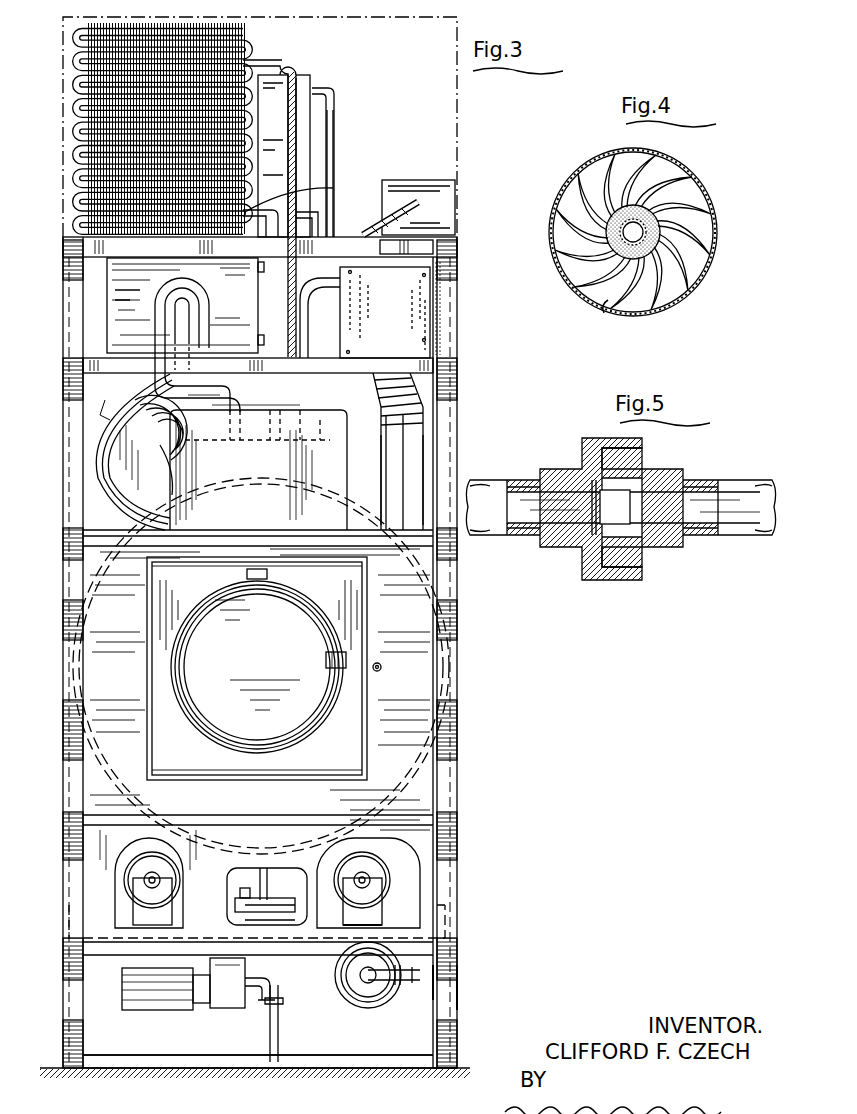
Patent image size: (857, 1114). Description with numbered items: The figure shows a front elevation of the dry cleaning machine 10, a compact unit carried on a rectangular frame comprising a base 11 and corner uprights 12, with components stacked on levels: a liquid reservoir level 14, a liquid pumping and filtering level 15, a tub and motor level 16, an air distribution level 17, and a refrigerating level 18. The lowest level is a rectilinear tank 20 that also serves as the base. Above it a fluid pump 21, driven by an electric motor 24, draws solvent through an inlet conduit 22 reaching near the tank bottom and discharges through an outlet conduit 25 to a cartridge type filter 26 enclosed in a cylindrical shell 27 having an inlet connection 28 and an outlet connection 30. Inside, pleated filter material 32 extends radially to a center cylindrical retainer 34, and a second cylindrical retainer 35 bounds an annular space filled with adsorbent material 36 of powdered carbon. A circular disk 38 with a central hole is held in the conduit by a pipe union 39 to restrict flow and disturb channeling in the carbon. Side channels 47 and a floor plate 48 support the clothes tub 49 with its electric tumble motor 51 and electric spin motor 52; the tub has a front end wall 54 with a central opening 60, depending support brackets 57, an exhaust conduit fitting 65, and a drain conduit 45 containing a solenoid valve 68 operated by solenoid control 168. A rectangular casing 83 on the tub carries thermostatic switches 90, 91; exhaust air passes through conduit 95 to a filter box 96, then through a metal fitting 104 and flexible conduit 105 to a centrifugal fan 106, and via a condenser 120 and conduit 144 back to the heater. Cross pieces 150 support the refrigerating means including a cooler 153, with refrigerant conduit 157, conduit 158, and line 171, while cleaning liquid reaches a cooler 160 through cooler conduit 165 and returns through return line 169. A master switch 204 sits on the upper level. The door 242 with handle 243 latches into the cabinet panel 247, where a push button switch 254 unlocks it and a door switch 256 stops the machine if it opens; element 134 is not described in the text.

In FIG. 3, the dry cleaning machine 10 is at (455, 737).
In FIG. 3, the base 11 is at (380, 1071).
In FIG. 3, the corner uprights 12 is at (63, 997).
In FIG. 3, the liquid reservoir level 14 is at (458, 1013).
In FIG. 3, the liquid pumping and filtering level 15 is at (458, 989).
In FIG. 3, the tub and motor level 16 is at (458, 806).
In FIG. 3, the air distribution level 17 is at (458, 441).
In FIG. 3, the refrigerating level 18 is at (458, 137).
In FIG. 3, the rectilinear tank 20 is at (336, 1059).
In FIG. 3, the fluid pump 21 is at (226, 1009).
In FIG. 3, the inlet conduit 22 is at (280, 1009).
In FIG. 3, the electric motor 24 is at (122, 993).
In FIG. 5, the outlet conduit 25 is at (700, 537).
In FIG. 3, the cartridge type filter 26 is at (352, 986).
In FIG. 4, the cylindrical shell 27 is at (660, 317).
In FIG. 3, the inlet connection 28 is at (370, 965).
In FIG. 5, the inlet connection 28 is at (490, 537).
In FIG. 3, the outlet connection 30 is at (368, 1006).
In FIG. 4, the pleated filter material 32 is at (606, 315).
In FIG. 4, the center cylindrical retainer 34 is at (660, 227).
In FIG. 4, the second cylindrical retainer 35 is at (668, 175).
In FIG. 4, the adsorbent material 36 is at (648, 241).
In FIG. 5, the circular disk 38 is at (606, 533).
In FIG. 5, the pipe union 39 is at (608, 582).
In FIG. 3, the drain conduit 45 is at (260, 1013).
In FIG. 3, the side channels 47 is at (75, 937).
In FIG. 3, the floor plate 48 is at (172, 941).
In FIG. 3, the clothes tub 49 is at (442, 585).
In FIG. 3, the electric tumble motor 51 is at (138, 887).
In FIG. 3, the electric spin motor 52 is at (410, 889).
In FIG. 3, the front end wall 54 is at (362, 884).
In FIG. 3, the support brackets 57 is at (420, 853).
In FIG. 3, the central opening 60 is at (360, 733).
In FIG. 3, the conduit fitting 65 is at (376, 506).
In FIG. 3, the solenoid valve 68 is at (278, 913).
In FIG. 3, the rectangular casing 83 is at (347, 496).
In FIG. 3, the safety thermostatic switch 90 is at (258, 462).
In FIG. 3, the thermostatic control switch 91 is at (313, 448).
In FIG. 3, the conduit 95 is at (424, 391).
In FIG. 3, the filter box 96 is at (440, 333).
In FIG. 3, the metal fitting 104 is at (340, 327).
In FIG. 3, the flexible conduit 105 is at (144, 471).
In FIG. 3, the centrifugal fan 106 is at (158, 446).
In FIG. 3, the condenser 120 is at (107, 290).
In FIG. 3, the blower housing 134 is at (135, 452).
In FIG. 3, the conduit 144 is at (138, 315).
In FIG. 3, the cross pieces 150 is at (458, 247).
In FIG. 3, the cooler 153 is at (246, 33).
In FIG. 3, the conduit 157 is at (334, 190).
In FIG. 3, the conduit 158 is at (310, 78).
In FIG. 3, the cooler 160 is at (334, 92).
In FIG. 3, the cooler conduit 165 is at (320, 212).
In FIG. 3, the solenoid control 168 is at (238, 897).
In FIG. 3, the return line 169 is at (334, 145).
In FIG. 3, the line 171 is at (292, 67).
In FIG. 3, the master switch 204 is at (458, 212).
In FIG. 3, the door 242 is at (362, 771).
In FIG. 3, the handle 243 is at (326, 661).
In FIG. 3, the cabinet panel 247 is at (440, 783).
In FIG. 3, the push button switch 254 is at (380, 663).
In FIG. 3, the door switch 256 is at (282, 573).